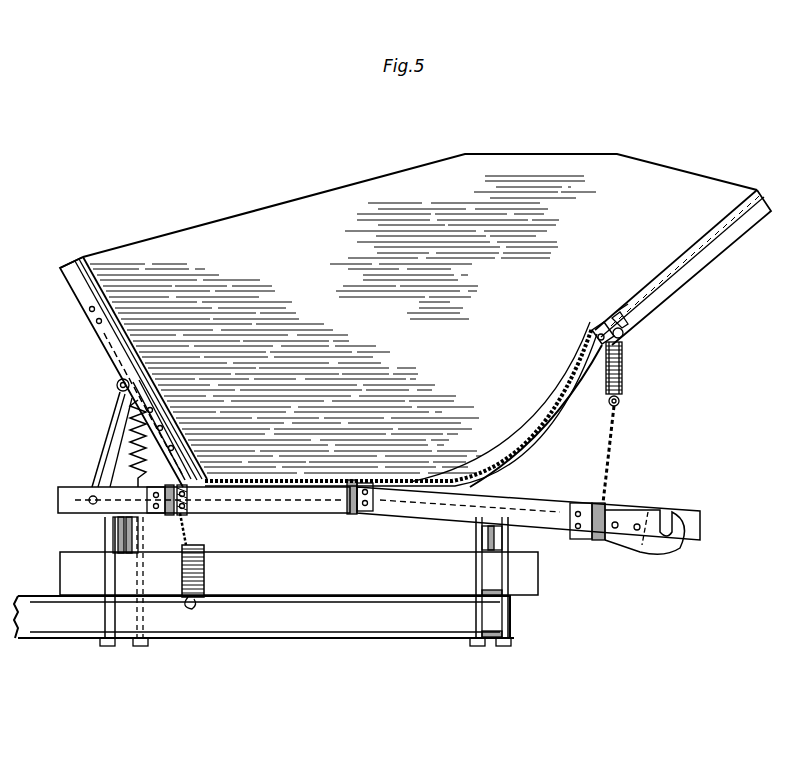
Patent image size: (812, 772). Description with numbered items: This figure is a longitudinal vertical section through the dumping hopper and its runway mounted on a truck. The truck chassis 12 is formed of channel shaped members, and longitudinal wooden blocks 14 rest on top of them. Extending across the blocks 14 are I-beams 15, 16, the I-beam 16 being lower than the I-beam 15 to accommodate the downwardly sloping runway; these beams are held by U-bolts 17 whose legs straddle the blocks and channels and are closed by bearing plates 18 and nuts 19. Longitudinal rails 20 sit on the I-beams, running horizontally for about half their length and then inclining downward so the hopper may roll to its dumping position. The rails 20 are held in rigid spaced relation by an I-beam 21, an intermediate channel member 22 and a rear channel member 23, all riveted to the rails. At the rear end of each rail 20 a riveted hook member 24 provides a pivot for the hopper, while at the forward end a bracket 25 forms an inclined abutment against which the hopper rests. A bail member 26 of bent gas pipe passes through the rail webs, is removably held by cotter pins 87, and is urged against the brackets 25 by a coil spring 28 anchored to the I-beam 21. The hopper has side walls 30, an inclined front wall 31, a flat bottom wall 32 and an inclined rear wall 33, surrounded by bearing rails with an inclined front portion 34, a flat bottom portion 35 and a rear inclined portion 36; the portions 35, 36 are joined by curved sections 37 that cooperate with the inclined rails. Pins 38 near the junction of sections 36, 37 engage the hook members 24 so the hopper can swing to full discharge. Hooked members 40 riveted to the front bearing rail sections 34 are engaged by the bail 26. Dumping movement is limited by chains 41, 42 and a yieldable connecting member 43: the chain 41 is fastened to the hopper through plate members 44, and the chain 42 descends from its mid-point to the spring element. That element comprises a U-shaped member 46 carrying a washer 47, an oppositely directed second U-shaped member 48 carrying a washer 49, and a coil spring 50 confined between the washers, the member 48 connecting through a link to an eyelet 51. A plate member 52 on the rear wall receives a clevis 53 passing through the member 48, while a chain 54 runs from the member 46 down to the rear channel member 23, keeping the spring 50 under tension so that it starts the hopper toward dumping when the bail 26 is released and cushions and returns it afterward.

The chassis framework 12 is at (408, 618).
The longitudinal blocks 14 is at (530, 568).
The I-beam 15 is at (120, 527).
The I-beam 16 is at (488, 541).
The U-bolts 17 is at (106, 573).
The bearing plates 18 is at (498, 645).
The nuts 19 is at (476, 645).
The rails 20 is at (524, 511).
The I-beam 21 is at (185, 503).
The intermediate channel member 22 is at (360, 513).
The rear channel member 23 is at (590, 511).
The hook member 24 is at (628, 521).
The bracket 25 is at (128, 445).
The bail member 26 is at (114, 416).
The coil spring 28 is at (126, 470).
The side walls 30 is at (478, 168).
The inclined front wall 31 is at (90, 262).
The flat bottom wall 32 is at (290, 484).
The inclined rear wall 33 is at (692, 248).
The inclined front portion of bearing rails 34 is at (72, 284).
The flat bottom portion of bearing rails 35 is at (298, 513).
The rear inclined portion of bearing rails 36 is at (728, 244).
The curved sections 37 is at (545, 425).
The pins 38 is at (590, 328).
The hooked members 40 is at (116, 384).
The chain 41 is at (102, 330).
The chain 42 is at (160, 460).
The yieldable connecting member 43 is at (208, 575).
The plate members 44 is at (89, 308).
The U-shaped member 46 is at (624, 372).
The washer 47 is at (628, 336).
The second U-shaped member 48 is at (624, 388).
The washer 49 is at (622, 398).
The coil spring 50 is at (624, 357).
The eyelet 51 is at (180, 515).
The plate member 52 is at (630, 310).
The clevis 53 is at (628, 328).
The chain 54 is at (610, 475).
The cotter pins 87 is at (88, 500).